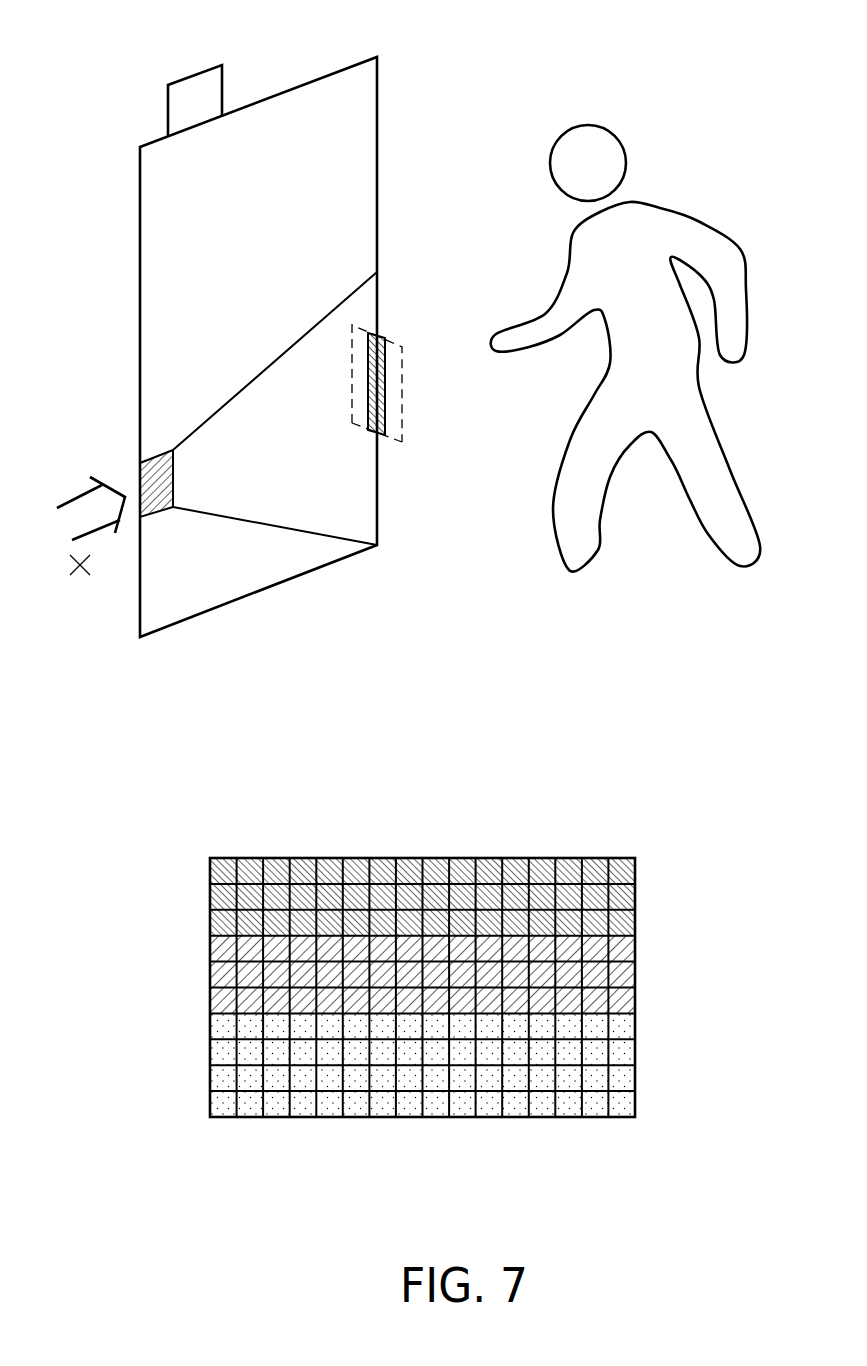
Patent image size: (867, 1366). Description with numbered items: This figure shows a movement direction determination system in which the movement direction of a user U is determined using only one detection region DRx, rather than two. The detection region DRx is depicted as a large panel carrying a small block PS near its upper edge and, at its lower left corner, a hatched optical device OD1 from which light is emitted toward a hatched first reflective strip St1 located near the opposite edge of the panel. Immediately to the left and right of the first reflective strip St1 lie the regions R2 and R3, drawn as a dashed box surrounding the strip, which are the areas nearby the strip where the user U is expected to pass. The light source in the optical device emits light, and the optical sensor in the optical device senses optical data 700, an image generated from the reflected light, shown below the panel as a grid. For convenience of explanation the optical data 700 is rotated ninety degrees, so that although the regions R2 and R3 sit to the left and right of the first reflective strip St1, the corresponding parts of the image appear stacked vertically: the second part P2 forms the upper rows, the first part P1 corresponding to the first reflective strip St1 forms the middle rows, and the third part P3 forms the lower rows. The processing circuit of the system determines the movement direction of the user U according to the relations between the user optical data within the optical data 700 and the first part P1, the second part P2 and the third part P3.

The detection region DRx is at (344, 83).
The position sensor PS is at (195, 100).
The optical device OD1 is at (155, 463).
The first reflective strip St1 is at (380, 340).
The region R2 is at (395, 373).
The region R3 is at (360, 422).
The user U is at (606, 131).
The optical data 700 is at (655, 810).
The first part P1 is at (635, 978).
The second part P2 is at (635, 867).
The third part P3 is at (635, 1100).